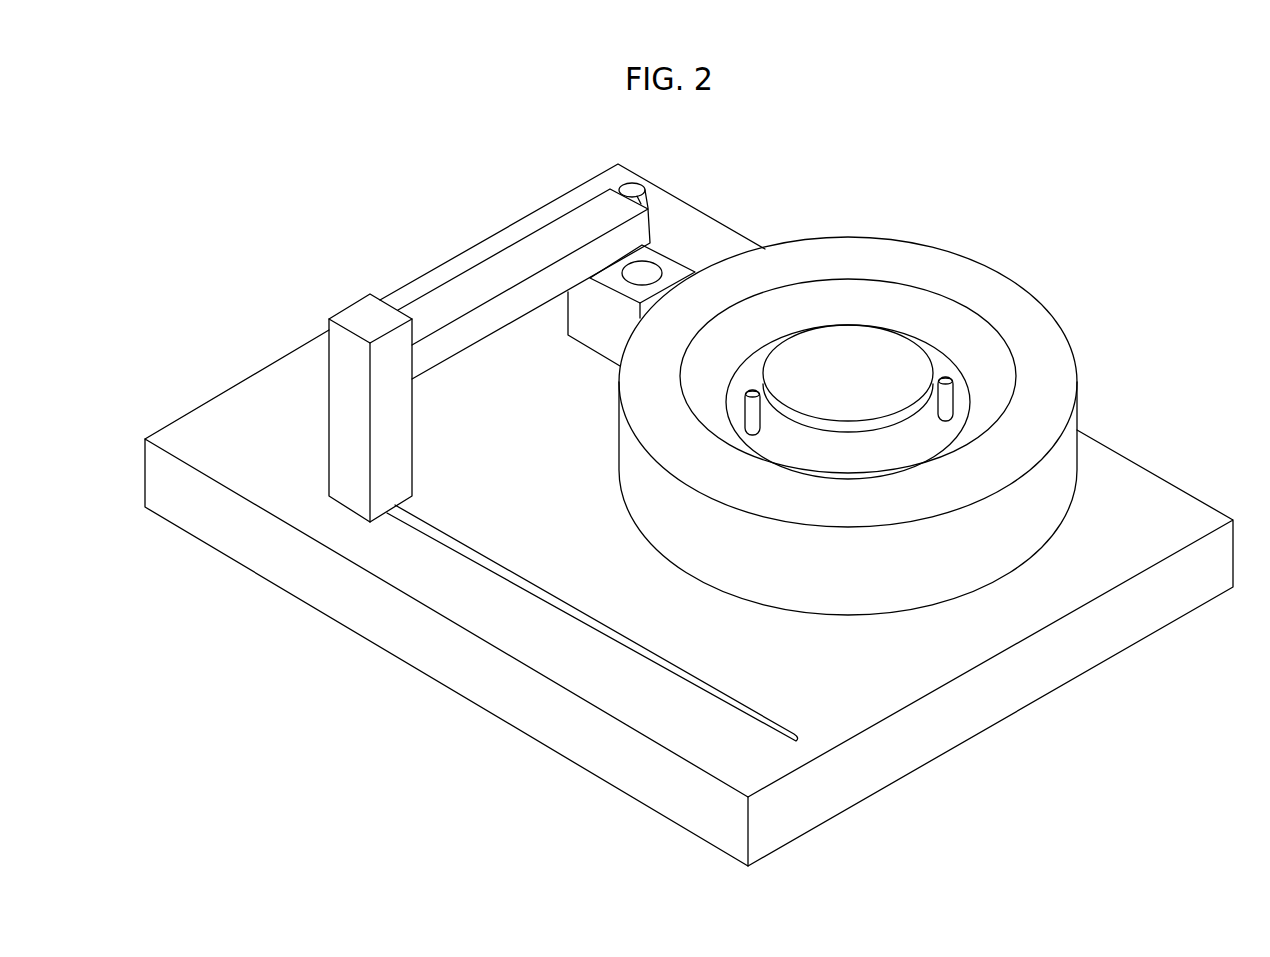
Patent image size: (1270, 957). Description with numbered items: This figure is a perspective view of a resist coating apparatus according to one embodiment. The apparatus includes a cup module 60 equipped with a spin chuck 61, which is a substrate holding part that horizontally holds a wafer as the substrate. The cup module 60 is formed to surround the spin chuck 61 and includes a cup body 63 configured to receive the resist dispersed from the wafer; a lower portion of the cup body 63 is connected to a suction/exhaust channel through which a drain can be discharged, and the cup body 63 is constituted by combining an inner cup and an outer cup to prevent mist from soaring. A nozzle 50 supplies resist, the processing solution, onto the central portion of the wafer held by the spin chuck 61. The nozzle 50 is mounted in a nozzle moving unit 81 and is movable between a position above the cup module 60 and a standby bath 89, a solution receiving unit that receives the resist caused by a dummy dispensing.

The nozzle 50 is at (631, 190).
The cup module 60 is at (1106, 313).
The spin chuck 61 is at (863, 340).
The cup body 63 is at (958, 272).
The nozzle moving unit 81 is at (328, 440).
The standby bath 89 is at (668, 258).